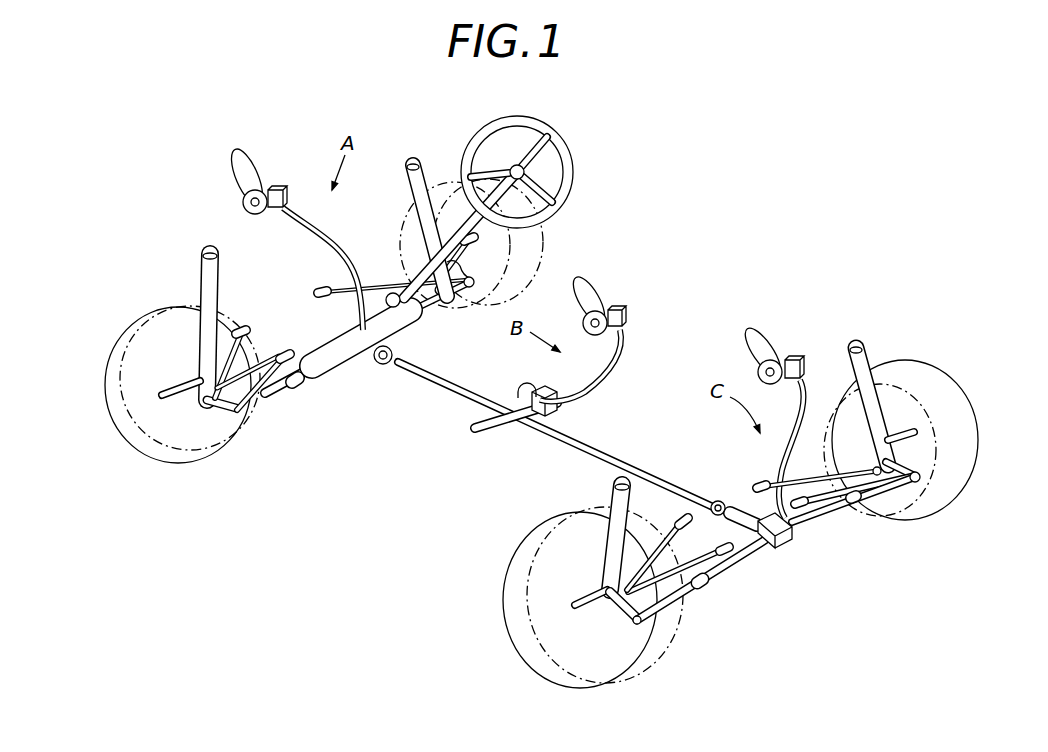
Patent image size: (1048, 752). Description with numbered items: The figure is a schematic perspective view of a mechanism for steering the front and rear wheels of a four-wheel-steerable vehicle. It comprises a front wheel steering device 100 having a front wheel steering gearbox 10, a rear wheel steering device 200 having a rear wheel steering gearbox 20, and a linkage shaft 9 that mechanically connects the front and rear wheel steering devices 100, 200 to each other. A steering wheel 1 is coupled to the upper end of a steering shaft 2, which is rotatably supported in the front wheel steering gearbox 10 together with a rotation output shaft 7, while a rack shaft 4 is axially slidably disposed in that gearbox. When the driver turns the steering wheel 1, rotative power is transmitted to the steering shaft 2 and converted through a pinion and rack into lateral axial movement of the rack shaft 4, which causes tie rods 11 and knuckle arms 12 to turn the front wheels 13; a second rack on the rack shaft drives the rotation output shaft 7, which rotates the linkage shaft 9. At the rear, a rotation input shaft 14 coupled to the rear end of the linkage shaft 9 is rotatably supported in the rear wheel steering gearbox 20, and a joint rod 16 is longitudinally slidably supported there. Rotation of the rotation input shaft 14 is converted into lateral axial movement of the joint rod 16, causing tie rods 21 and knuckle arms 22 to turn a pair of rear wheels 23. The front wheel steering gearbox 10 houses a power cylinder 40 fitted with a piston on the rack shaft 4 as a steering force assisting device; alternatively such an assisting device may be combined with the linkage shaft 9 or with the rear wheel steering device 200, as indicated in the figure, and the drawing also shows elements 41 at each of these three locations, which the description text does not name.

The steering wheel 1 is at (554, 137).
The steering shaft 2 is at (393, 293).
The rack shaft 4 is at (310, 378).
The rotation output shaft 7 is at (378, 365).
The linkage shaft 9 is at (452, 392).
The front wheel steering gearbox 10 is at (328, 358).
The tie rods 11 is at (277, 398).
The knuckle arms 12 is at (207, 413).
The front wheels 13 is at (127, 335).
The rotation input shaft 14 is at (737, 503).
The joint rod 16 is at (720, 572).
The rear wheel steering gearbox 20 is at (758, 553).
The tie rods 21 is at (682, 600).
The knuckle arms 22 is at (627, 612).
The rear wheels 23 is at (520, 588).
The power cylinder 40 is at (500, 424).
The brake lever 41 is at (273, 185).
The front wheel steering device 100 is at (350, 423).
The rear wheel steering device 200 is at (833, 568).